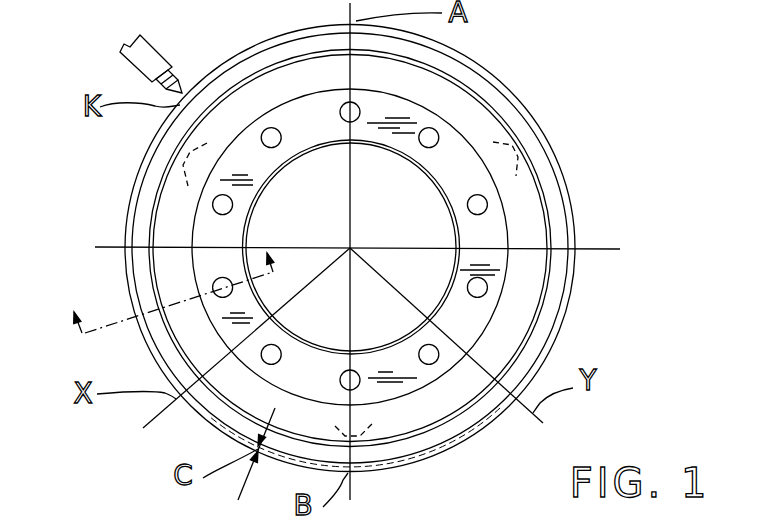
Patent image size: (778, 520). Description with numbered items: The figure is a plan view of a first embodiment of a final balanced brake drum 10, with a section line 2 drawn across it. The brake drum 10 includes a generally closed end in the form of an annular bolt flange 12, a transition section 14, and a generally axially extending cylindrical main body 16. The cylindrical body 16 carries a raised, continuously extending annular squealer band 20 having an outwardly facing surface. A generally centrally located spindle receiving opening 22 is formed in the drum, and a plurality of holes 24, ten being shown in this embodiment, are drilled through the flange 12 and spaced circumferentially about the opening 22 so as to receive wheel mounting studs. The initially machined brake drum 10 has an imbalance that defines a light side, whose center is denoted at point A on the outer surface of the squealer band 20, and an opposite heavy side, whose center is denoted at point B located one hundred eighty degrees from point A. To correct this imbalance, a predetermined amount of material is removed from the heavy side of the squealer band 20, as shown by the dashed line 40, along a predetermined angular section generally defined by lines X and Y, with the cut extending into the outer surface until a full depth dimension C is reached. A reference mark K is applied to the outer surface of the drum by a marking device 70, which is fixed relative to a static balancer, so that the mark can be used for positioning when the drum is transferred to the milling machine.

The brake drum 10 is at (588, 180).
The annular bolt flange 12 is at (455, 152).
The transition section 14 is at (532, 223).
The cylindrical main body 16 is at (562, 276).
The squealer band 20 is at (562, 328).
The spindle receiving opening 22 is at (262, 187).
The holes 24 is at (193, 225).
The dashed line 40 is at (456, 449).
The marking device 70 is at (157, 42).
The section line 2- 2 is at (168, 306).